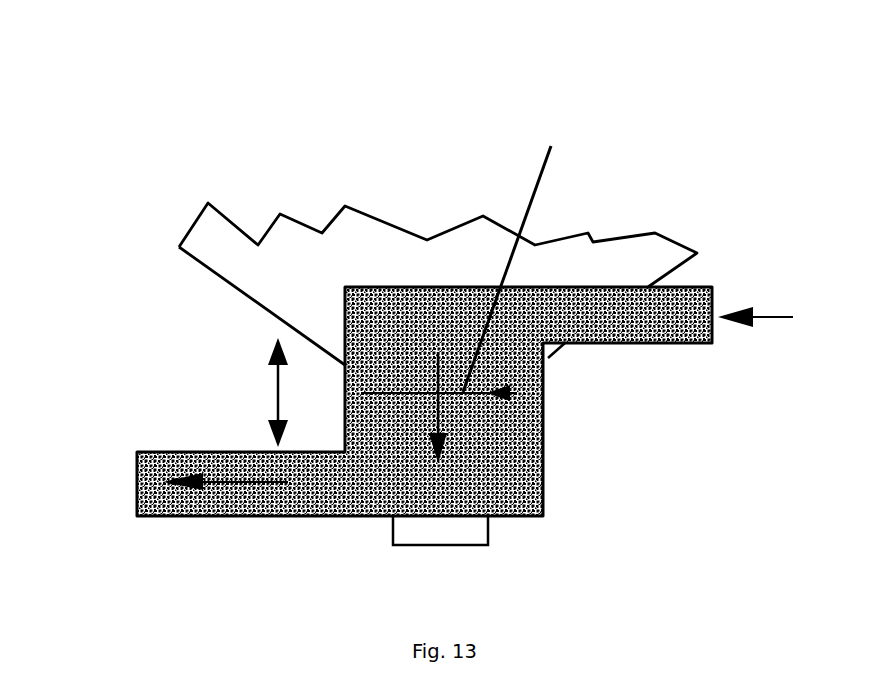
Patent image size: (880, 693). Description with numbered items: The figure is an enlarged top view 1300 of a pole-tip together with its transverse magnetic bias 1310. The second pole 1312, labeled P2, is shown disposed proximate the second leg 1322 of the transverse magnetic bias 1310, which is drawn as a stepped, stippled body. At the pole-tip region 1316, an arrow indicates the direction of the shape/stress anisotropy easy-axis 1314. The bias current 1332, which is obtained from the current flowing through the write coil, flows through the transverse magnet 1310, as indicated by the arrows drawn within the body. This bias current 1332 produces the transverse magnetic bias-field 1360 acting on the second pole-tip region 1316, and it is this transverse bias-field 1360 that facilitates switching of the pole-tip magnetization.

The enlarged top view 1300 is at (123, 108).
The transverse magnetic bias 1310 is at (228, 527).
The second pole 1312 is at (653, 257).
The shape/stress anisotropy easy-axis 1314 is at (277, 398).
The pole-tip region 1316 is at (472, 528).
The second leg 1322 is at (533, 452).
The bias current 1332 is at (442, 430).
The transverse magnetic bias-field 1360 is at (520, 256).